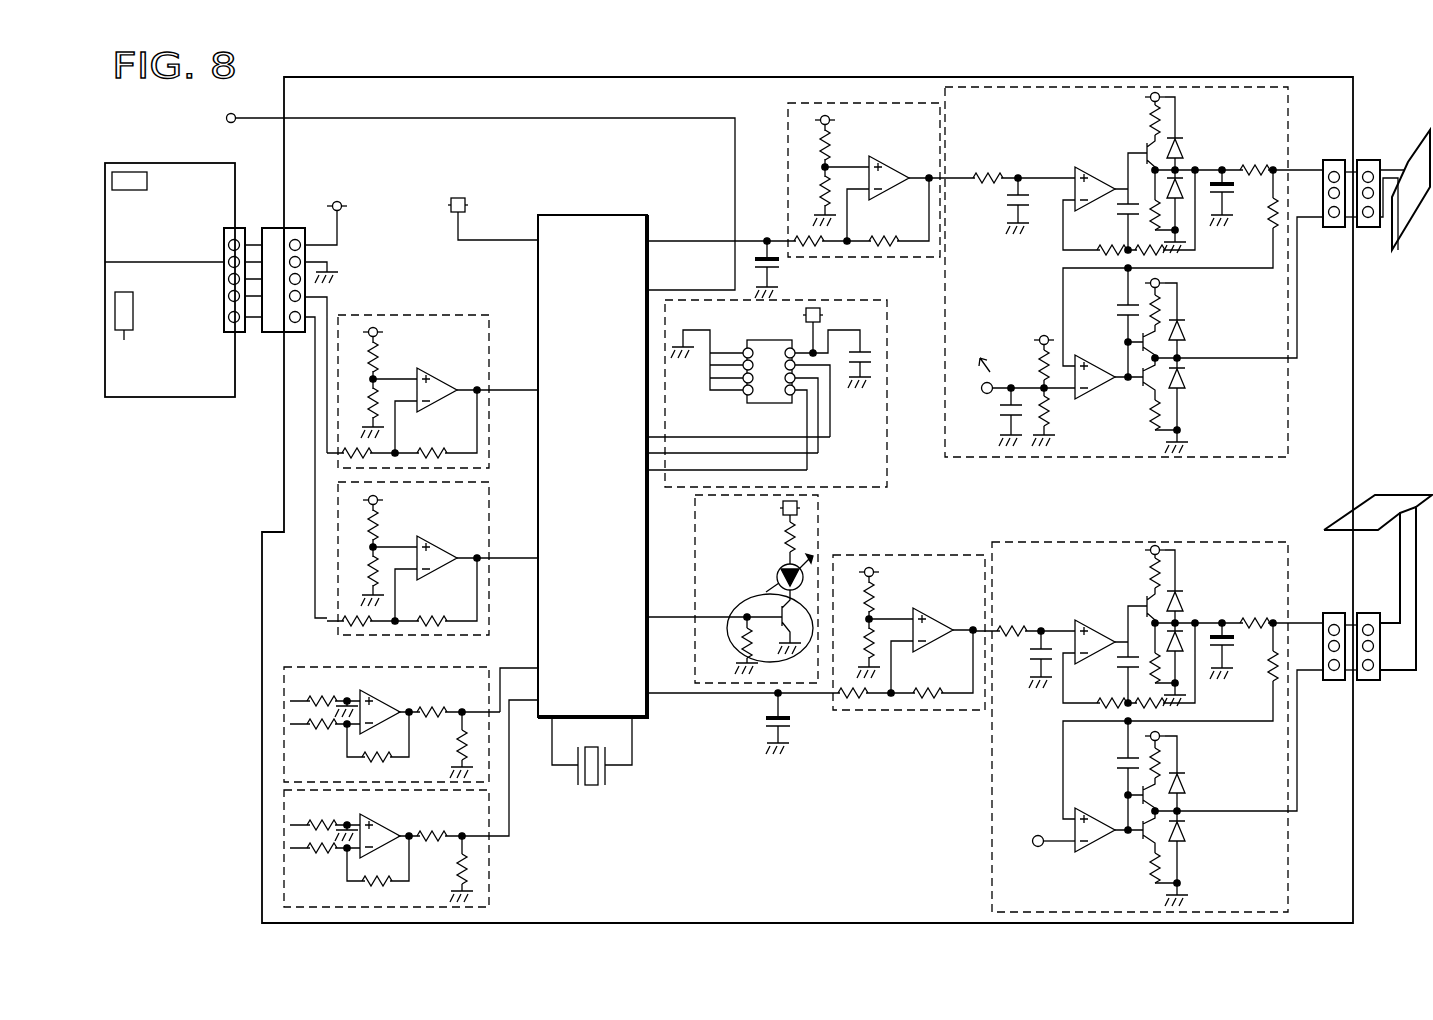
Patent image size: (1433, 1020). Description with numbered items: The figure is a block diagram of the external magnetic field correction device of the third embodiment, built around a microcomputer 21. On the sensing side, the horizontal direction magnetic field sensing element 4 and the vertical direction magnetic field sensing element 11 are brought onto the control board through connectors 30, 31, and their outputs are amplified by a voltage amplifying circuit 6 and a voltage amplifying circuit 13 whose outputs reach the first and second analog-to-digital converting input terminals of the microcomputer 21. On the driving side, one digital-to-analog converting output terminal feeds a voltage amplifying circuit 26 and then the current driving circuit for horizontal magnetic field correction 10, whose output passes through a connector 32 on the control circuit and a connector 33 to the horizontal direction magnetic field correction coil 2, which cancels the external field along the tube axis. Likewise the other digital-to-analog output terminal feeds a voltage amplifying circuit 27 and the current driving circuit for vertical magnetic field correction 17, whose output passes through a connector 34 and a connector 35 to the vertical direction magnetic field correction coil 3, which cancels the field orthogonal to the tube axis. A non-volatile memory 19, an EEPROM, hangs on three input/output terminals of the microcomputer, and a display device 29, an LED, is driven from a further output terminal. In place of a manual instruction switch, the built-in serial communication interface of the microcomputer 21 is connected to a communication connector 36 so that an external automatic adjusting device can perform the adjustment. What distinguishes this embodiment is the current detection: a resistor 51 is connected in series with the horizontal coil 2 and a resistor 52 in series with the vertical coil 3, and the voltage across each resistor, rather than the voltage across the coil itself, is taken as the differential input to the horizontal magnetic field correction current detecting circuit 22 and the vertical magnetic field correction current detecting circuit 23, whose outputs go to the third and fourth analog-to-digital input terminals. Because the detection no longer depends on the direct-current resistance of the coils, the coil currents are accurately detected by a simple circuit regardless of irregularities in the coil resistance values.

The horizontal direction magnetic field correction coil 2 is at (1422, 135).
The vertical direction magnetic field correction coil 3 is at (1397, 495).
The horizontal direction magnetic field sensing element 4 is at (125, 172).
The voltage amplifying circuit 6 is at (395, 315).
The current driving circuit for horizontal magnetic field correction 10 is at (1133, 267).
The vertical direction magnetic field sensing element 11 is at (124, 340).
The voltage amplifying circuit 13 is at (357, 637).
The current driving circuit for vertical magnetic field correction 17 is at (1148, 702).
The non-volatile memory (EEPROM) 19 is at (887, 458).
The microcomputer 21 is at (620, 215).
The horizontal magnetic field correction current detecting circuit 22 is at (283, 708).
The vertical magnetic field correction current detecting circuit 23 is at (283, 857).
The voltage amplifying circuit 26 is at (788, 132).
The voltage amplifying circuit 27 is at (920, 710).
The display device (LED) 29 is at (820, 522).
The sensor connector 30 is at (240, 228).
The board connector 31 is at (297, 228).
The connector 32 is at (1332, 227).
The connector 33 is at (1368, 160).
The connector 34 is at (1330, 681).
The connector 35 is at (1370, 681).
The communication connector 36 is at (227, 121).
The resistor 51 is at (1253, 163).
The resistor 52 is at (1255, 616).